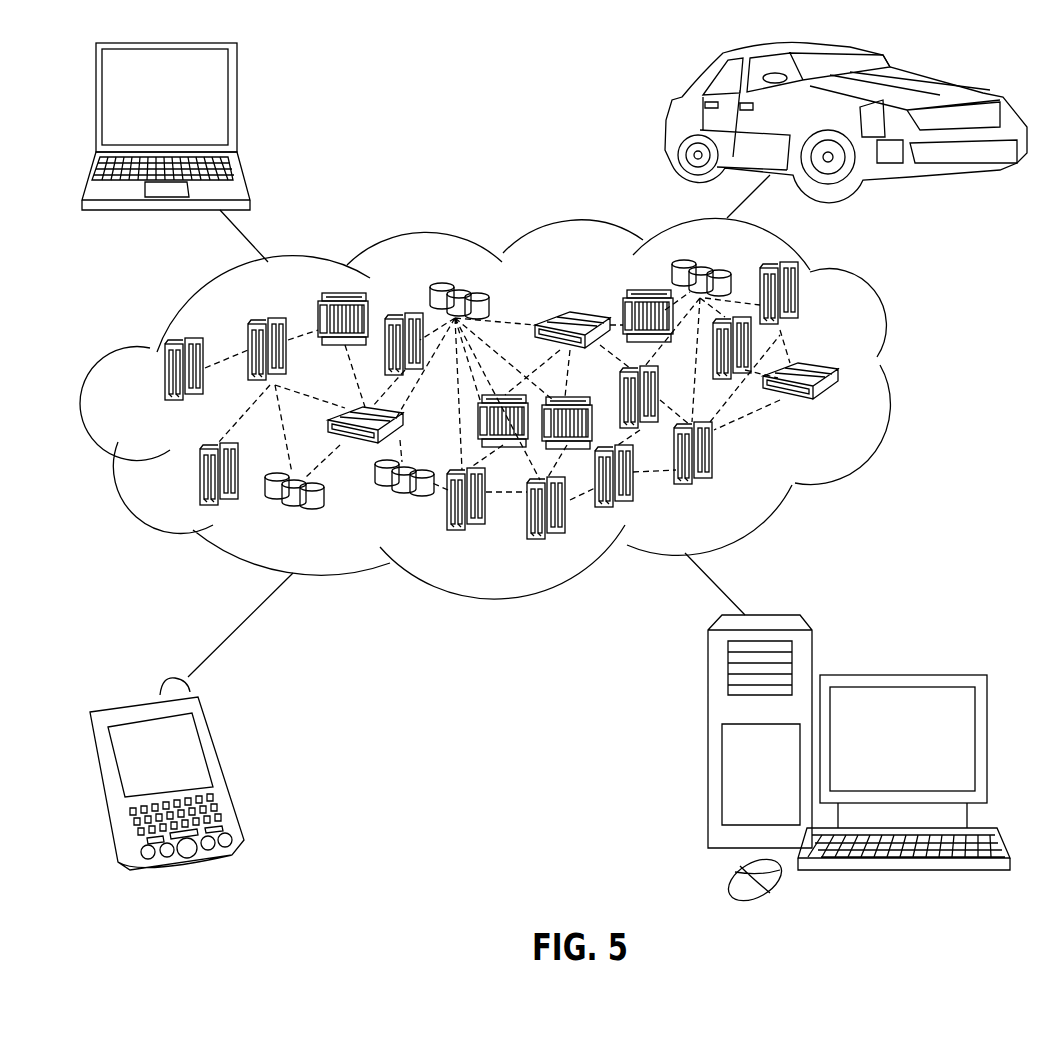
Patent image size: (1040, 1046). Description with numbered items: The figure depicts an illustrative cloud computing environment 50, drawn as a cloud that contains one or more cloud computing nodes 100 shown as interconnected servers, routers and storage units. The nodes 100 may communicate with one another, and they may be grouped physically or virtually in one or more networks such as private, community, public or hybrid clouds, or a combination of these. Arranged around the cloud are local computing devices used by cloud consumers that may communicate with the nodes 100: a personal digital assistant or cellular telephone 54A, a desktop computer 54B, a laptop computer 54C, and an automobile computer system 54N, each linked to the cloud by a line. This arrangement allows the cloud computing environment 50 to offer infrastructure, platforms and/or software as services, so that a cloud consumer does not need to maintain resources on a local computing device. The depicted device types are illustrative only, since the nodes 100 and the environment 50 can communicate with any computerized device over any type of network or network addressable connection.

The cloud computing environment 50 is at (878, 380).
The cloud computing nodes 100 is at (843, 412).
The personal digital assistant (PDA) or cellular telephone 54A is at (225, 770).
The desktop computer 54B is at (898, 675).
The laptop computer 54C is at (237, 107).
The automobile computer system 54N is at (675, 120).